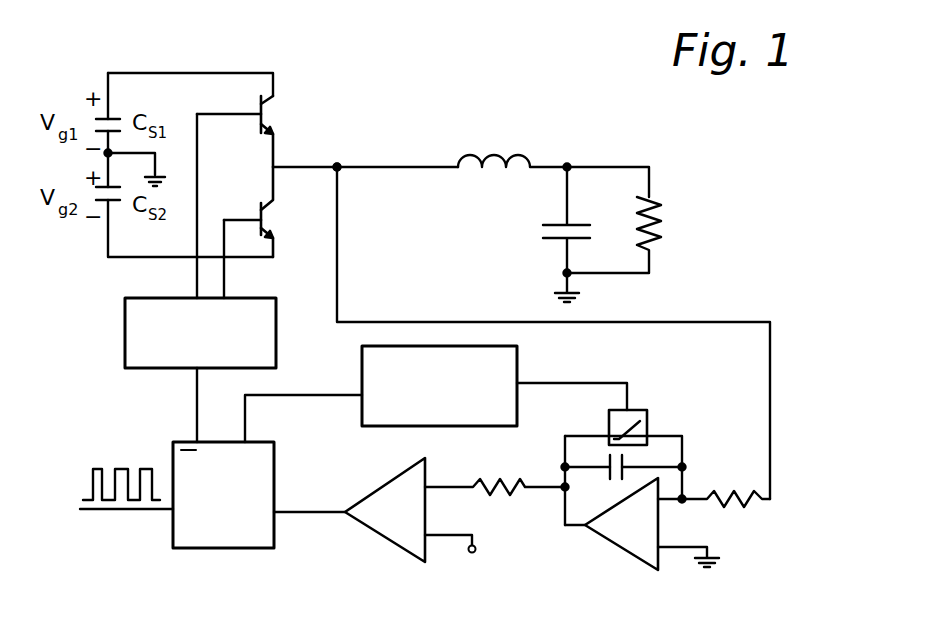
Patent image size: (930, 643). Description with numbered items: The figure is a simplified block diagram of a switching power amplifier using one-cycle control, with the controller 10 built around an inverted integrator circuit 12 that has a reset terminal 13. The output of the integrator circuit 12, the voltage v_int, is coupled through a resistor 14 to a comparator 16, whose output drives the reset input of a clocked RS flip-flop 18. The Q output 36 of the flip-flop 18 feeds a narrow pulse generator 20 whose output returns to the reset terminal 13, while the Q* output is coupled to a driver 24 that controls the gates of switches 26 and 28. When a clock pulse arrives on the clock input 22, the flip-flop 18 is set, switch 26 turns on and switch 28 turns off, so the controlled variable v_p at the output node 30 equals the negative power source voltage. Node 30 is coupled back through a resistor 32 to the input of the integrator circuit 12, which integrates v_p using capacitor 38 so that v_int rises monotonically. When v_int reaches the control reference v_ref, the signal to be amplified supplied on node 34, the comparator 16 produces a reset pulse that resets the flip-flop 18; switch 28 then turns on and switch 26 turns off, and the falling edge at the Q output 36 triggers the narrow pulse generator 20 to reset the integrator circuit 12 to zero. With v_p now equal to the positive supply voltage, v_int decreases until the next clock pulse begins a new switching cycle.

The controller 10 is at (560, 115).
The integrator circuit 12 is at (664, 522).
The reset terminal 13 is at (627, 398).
The resistor 14 is at (527, 481).
The comparator 16 is at (370, 528).
The clocked RS flip-flop 18 is at (242, 548).
The narrow pulse generator 20 is at (517, 353).
The clock input 22 is at (74, 512).
The driver 24 is at (150, 368).
The switch 26 is at (274, 230).
The switch 28 is at (270, 109).
The output node 30 is at (341, 163).
The resistor 32 is at (737, 487).
The node 34 is at (468, 553).
The Q output 36 is at (248, 433).
The capacitor 38 is at (622, 462).